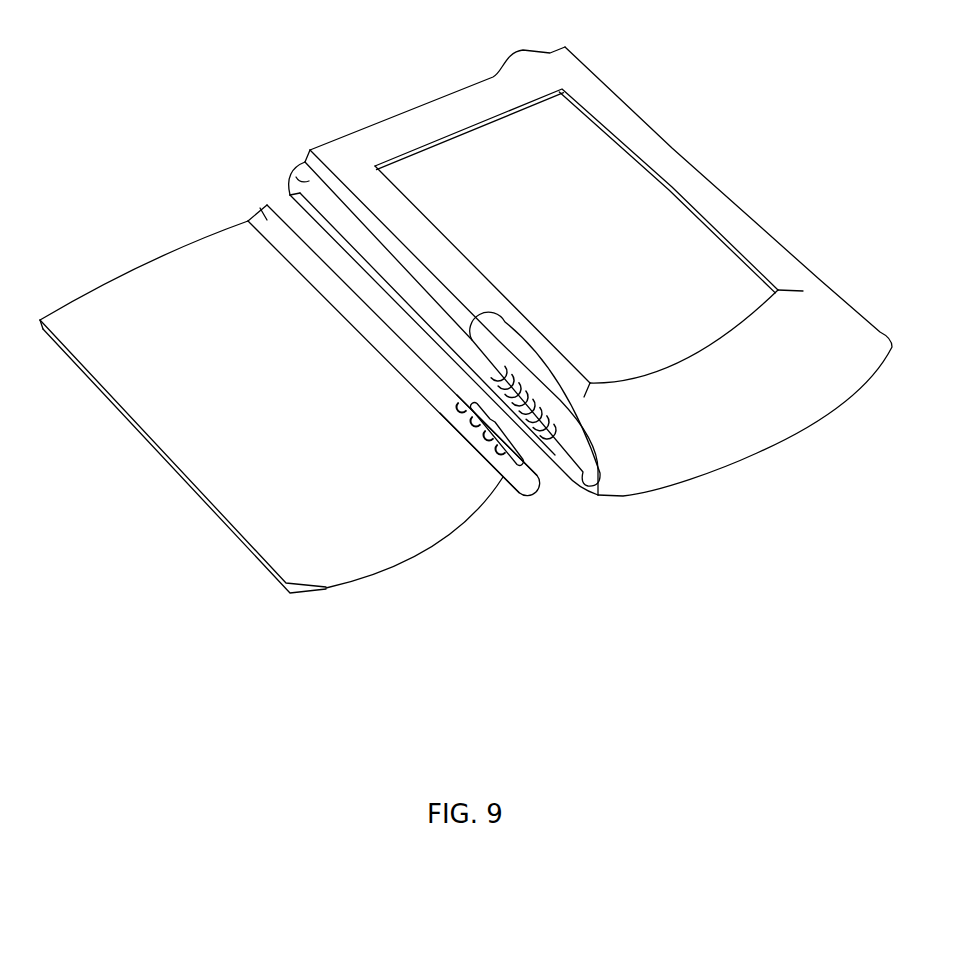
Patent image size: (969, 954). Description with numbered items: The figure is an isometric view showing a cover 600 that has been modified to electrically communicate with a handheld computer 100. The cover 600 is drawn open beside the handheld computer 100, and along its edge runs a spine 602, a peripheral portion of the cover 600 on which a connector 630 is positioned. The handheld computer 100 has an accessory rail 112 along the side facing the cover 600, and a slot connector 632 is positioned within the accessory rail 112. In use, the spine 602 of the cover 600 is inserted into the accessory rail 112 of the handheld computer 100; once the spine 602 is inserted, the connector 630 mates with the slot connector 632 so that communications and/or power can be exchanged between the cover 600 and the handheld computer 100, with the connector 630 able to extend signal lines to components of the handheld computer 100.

The handheld computer 100 is at (703, 97).
The accessory rail 112 is at (293, 170).
The cover 600 is at (157, 255).
The spine 602 is at (263, 213).
The connector 630 is at (529, 472).
The slot connector 632 is at (497, 375).